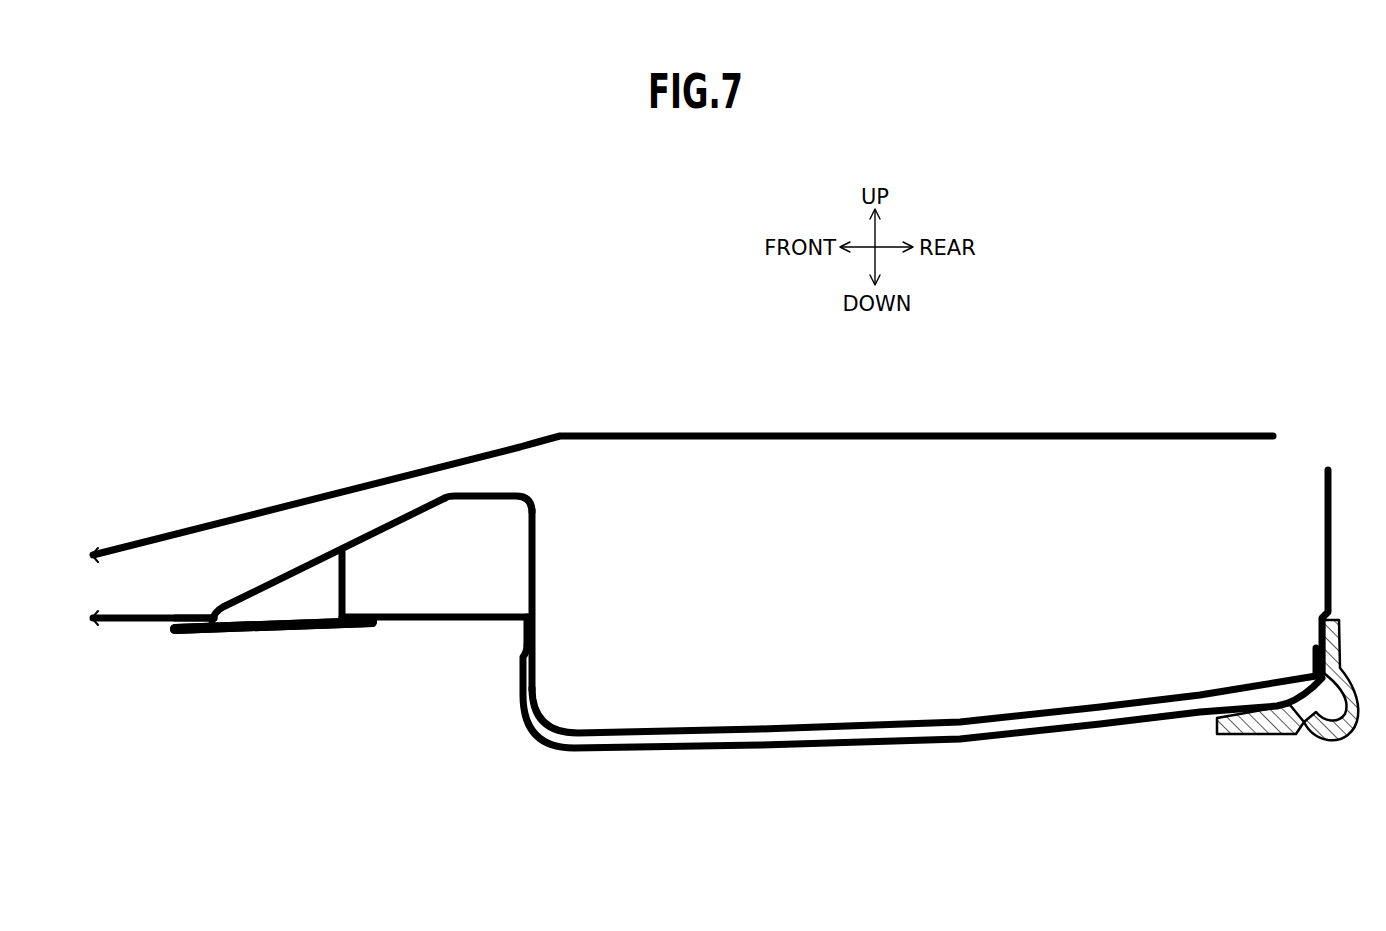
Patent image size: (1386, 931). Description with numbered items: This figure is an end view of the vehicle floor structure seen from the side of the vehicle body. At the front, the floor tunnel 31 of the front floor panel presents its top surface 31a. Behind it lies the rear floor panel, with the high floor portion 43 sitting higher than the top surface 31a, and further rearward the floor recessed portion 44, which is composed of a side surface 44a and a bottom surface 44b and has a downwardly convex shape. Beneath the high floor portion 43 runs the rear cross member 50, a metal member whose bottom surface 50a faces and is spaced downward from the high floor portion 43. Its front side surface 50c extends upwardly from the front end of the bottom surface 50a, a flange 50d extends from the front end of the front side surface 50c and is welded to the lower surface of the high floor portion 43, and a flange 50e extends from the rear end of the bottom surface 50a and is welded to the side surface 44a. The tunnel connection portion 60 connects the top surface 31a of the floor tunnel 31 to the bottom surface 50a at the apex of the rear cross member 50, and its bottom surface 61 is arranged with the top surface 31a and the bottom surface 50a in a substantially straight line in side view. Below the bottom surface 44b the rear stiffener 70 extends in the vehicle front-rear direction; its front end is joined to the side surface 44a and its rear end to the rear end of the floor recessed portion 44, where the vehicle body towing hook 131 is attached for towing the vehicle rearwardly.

The floor tunnel 31 is at (133, 625).
The top surface 31a is at (189, 656).
The high floor portion 43 is at (498, 493).
The floor recessed portion 44 is at (924, 621).
The side surface 44a is at (536, 593).
The bottom surface 44b is at (738, 728).
The rear cross member 50 is at (370, 654).
The bottom surface 50a is at (422, 624).
The front side surface 50c is at (348, 590).
The flange 50d is at (330, 563).
The flange 50e is at (500, 656).
The tunnel connection portion 60 is at (253, 634).
The bottom surface 61 is at (273, 674).
The rear stiffener 70 is at (565, 748).
The vehicle body towing hook 131 is at (1310, 740).